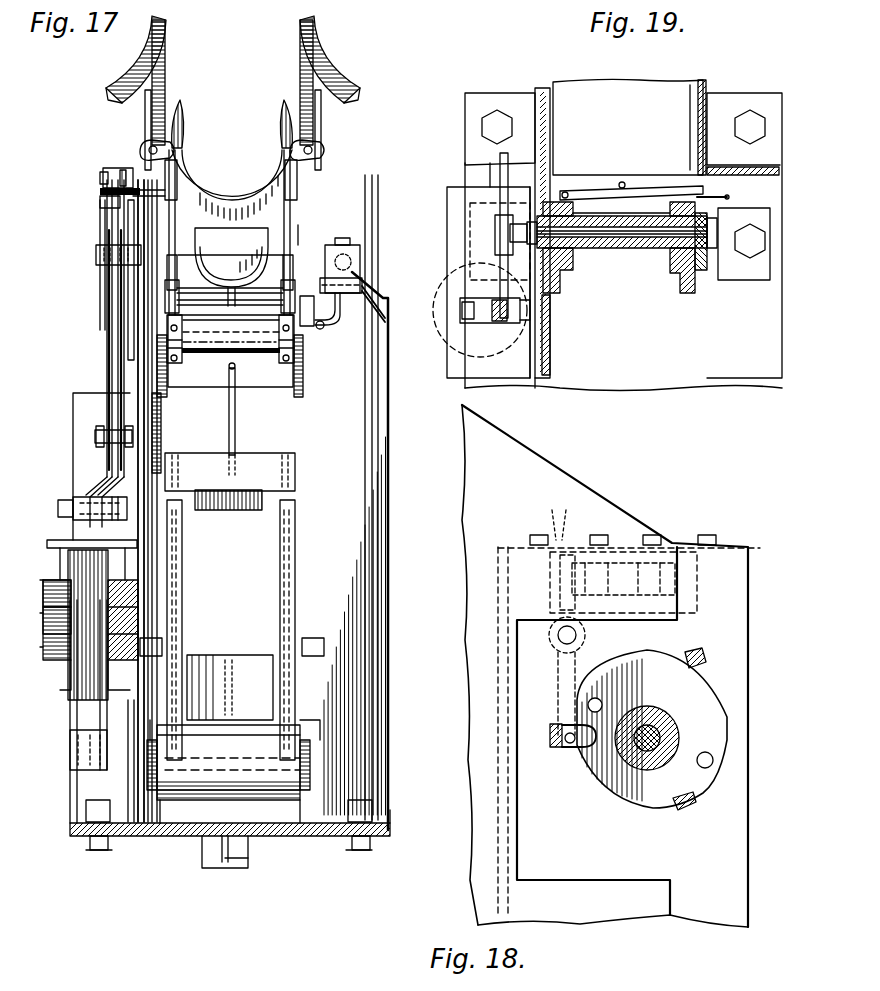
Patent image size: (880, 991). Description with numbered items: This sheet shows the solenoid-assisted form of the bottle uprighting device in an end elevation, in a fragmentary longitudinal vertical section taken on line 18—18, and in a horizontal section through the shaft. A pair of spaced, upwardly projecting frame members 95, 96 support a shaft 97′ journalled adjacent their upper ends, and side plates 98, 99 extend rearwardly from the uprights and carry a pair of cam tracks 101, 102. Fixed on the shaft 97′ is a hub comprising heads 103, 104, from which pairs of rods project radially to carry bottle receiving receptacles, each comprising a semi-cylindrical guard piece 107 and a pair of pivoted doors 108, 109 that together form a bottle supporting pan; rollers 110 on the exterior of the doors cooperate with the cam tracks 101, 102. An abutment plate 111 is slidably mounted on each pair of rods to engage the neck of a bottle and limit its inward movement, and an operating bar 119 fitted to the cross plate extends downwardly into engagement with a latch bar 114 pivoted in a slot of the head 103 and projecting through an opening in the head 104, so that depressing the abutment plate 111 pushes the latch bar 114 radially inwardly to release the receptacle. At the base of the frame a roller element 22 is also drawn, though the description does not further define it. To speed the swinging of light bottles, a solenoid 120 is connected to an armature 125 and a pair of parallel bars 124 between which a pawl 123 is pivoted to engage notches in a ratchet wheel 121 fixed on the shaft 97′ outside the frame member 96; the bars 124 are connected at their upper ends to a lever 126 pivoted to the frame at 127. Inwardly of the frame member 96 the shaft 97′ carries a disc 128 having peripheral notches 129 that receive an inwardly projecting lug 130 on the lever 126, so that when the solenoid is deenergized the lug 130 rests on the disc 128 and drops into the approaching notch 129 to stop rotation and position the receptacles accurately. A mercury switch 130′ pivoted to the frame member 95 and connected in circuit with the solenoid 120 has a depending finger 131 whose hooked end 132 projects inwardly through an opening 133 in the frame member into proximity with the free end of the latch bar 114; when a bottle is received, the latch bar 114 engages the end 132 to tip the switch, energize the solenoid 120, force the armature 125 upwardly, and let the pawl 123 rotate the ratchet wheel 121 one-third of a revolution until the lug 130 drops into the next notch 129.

In FIG. 17, the section line 18 is at (305, 228).
In FIG. 17, the roller 22 is at (238, 722).
In FIG. 17, the frame member 95 is at (142, 370).
In FIG. 19, the frame member 95 is at (495, 170).
In FIG. 17, the frame member 96 is at (380, 496).
In FIG. 17, the shaft 97′ is at (272, 360).
In FIG. 19, the shaft 97′ is at (625, 240).
In FIG. 17, the side plate 98 is at (148, 124).
In FIG. 19, the side plate 98 is at (535, 102).
In FIG. 17, the side plate 99 is at (318, 118).
In FIG. 19, the side plate 99 is at (710, 84).
In FIG. 17, the cam track 101 is at (330, 64).
In FIG. 17, the cam track 102 is at (132, 70).
In FIG. 19, the head 103 is at (566, 285).
In FIG. 19, the head 104 is at (672, 278).
In FIG. 17, the guard piece 107 is at (262, 192).
In FIG. 17, the pivoted door 108 is at (183, 124).
In FIG. 17, the pivoted door 109 is at (282, 138).
In FIG. 17, the roller 110 is at (140, 148).
In FIG. 17, the abutment plate 111 is at (262, 238).
In FIG. 17, the latch bar 114 is at (228, 400).
In FIG. 19, the latch bar 114 is at (642, 190).
In FIG. 18, the latch bar 114 is at (695, 652).
In FIG. 17, the operating bar 119 is at (236, 428).
In FIG. 19, the operating bar 119 is at (622, 182).
In FIG. 17, the solenoid 120 is at (56, 590).
In FIG. 19, the solenoid 120 is at (433, 310).
In FIG. 17, the ratchet wheel 121 is at (112, 310).
In FIG. 19, the ratchet wheel 121 is at (467, 190).
In FIG. 17, the pawl 123 is at (95, 430).
In FIG. 17, the parallel bars 124 is at (92, 482).
In FIG. 19, the parallel bars 124 is at (470, 325).
In FIG. 17, the armature 125 is at (70, 520).
In FIG. 17, the lever 126 is at (100, 192).
In FIG. 17, the pivot 127 is at (102, 177).
In FIG. 17, the disc 128 is at (155, 285).
In FIG. 19, the disc 128 is at (552, 320).
In FIG. 17, the peripheral notch 129 is at (198, 386).
In FIG. 17, the lug 130 is at (140, 205).
In FIG. 18, the lug 130 is at (695, 585).
In FIG. 17, the mercury switch 130′ is at (418, 262).
In FIG. 17, the finger 131 is at (340, 310).
In FIG. 18, the finger 131 is at (580, 675).
In FIG. 17, the hooked end 132 is at (328, 326).
In FIG. 19, the hooked end 132 is at (718, 194).
In FIG. 18, the hooked end 132 is at (568, 743).
In FIG. 19, the opening 133 is at (707, 168).
In FIG. 18, the opening 133 is at (575, 750).